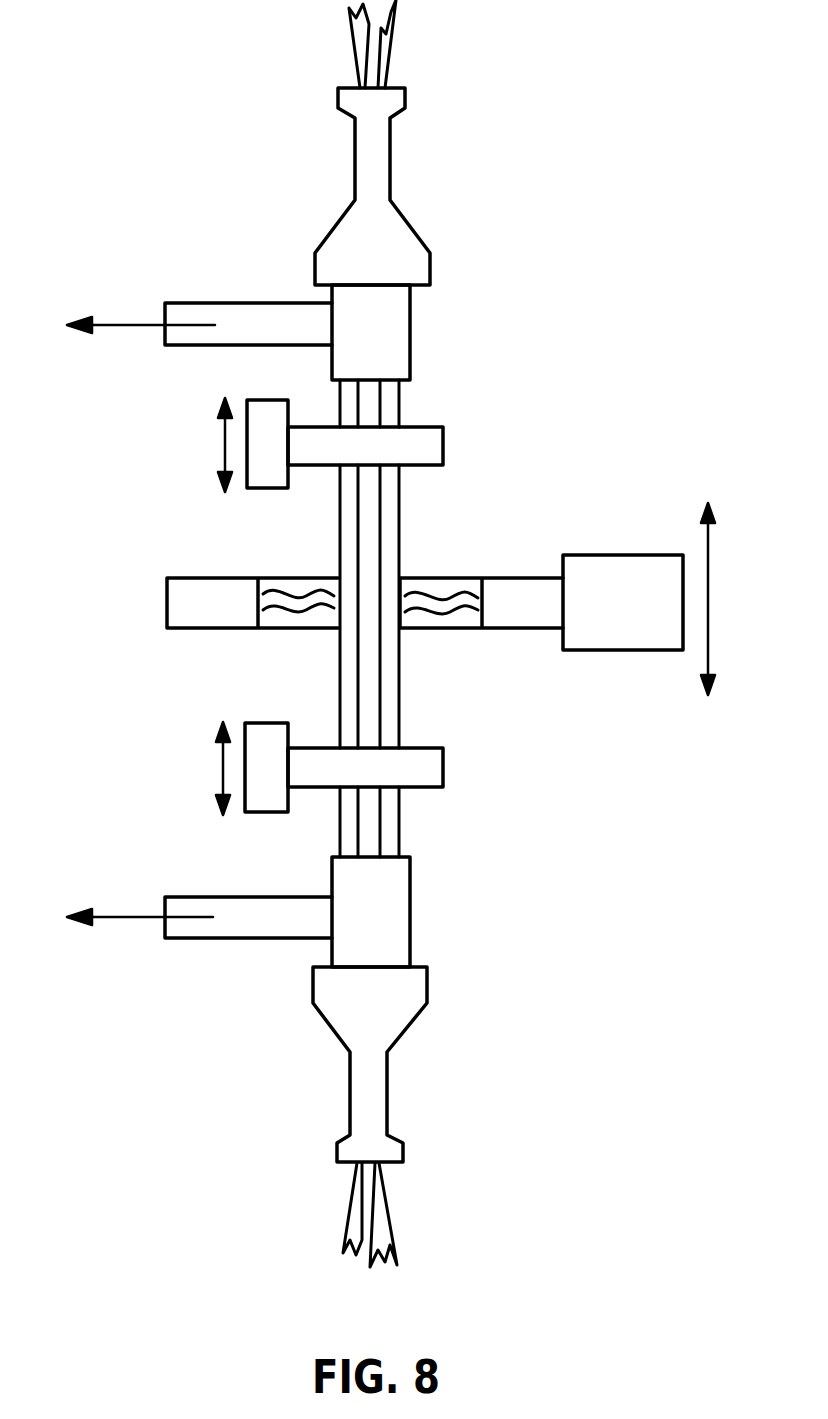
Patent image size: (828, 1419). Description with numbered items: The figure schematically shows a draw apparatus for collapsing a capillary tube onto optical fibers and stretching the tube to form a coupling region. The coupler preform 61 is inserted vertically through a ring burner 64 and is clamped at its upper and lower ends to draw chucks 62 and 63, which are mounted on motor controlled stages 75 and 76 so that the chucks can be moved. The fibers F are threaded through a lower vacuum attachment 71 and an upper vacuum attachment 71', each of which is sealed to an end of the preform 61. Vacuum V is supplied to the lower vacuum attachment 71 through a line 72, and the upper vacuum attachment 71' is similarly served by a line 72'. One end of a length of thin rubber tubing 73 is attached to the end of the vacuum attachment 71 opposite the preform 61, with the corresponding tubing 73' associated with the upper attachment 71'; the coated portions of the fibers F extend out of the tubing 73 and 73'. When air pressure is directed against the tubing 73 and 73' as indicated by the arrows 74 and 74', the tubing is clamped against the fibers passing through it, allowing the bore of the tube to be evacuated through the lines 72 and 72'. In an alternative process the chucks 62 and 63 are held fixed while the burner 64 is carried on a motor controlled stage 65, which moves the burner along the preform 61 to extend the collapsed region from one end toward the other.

The preform 61 is at (401, 672).
The draw chuck 62 is at (443, 436).
The draw chuck 63 is at (443, 767).
The ring burner 64 is at (523, 578).
The motor controlled stage 65 is at (605, 555).
The vacuum attachment 71 is at (407, 912).
The upper vacuum attachment 71' is at (409, 332).
The line 72 is at (248, 943).
The line 72' is at (248, 297).
The thin rubber tubing 73 is at (399, 1064).
The tubing 73' is at (404, 186).
The arrows 74 is at (369, 1102).
The arrows 74' is at (371, 157).
The motor controlled stage 75 is at (270, 488).
The motor controlled stage 76 is at (265, 723).
The fibers F is at (384, 42).
The vacuum V is at (122, 320).